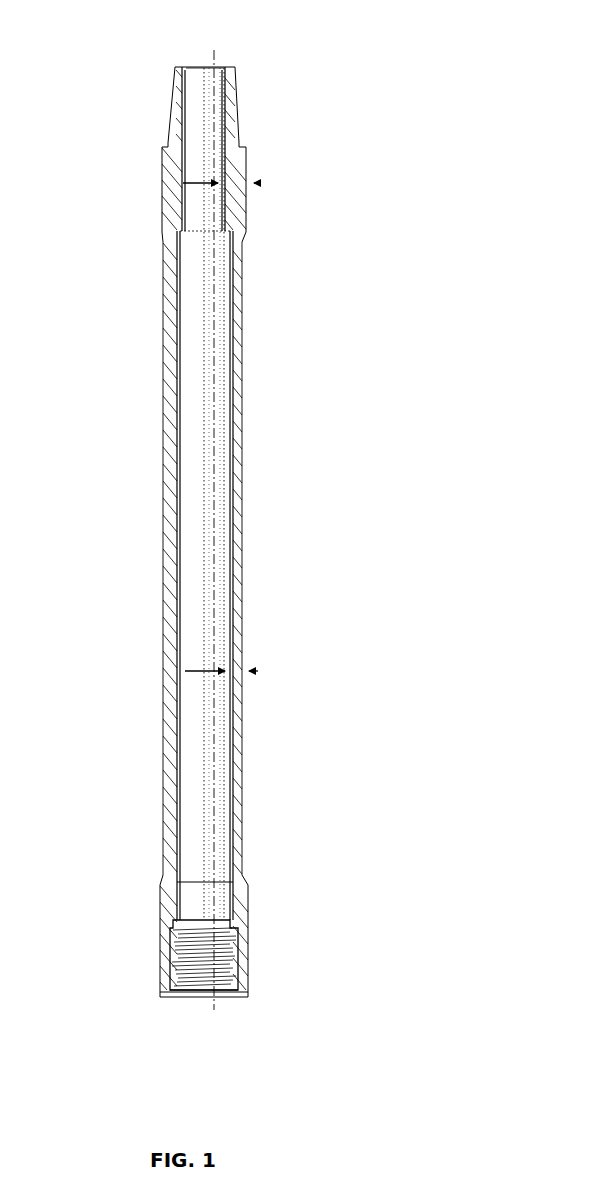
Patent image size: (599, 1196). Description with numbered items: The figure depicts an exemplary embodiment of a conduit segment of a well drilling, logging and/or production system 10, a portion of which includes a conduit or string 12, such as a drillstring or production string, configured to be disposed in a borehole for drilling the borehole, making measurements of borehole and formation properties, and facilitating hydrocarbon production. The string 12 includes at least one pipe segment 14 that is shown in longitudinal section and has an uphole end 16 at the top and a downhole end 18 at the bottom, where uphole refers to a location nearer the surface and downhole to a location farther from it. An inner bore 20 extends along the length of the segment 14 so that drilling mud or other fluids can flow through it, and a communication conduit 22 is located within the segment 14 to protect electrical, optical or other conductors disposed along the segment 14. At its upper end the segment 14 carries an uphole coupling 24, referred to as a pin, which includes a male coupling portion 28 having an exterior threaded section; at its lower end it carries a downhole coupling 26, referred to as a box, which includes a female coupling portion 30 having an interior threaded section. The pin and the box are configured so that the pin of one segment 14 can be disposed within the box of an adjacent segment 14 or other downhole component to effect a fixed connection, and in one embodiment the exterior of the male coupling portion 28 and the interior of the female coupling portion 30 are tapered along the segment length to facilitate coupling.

The well drilling, logging and/or production system 10 is at (74, 144).
The string 12 is at (126, 534).
The pipe segment 14 is at (234, 320).
The uphole end 16 is at (210, 66).
The downhole end 18 is at (208, 1000).
The inner bore 20 is at (204, 538).
The communication conduit 22 is at (177, 770).
The uphole coupling 24 is at (228, 133).
The downhole coupling 26 is at (240, 960).
The male coupling portion 28 is at (167, 123).
The female coupling portion 30 is at (172, 960).